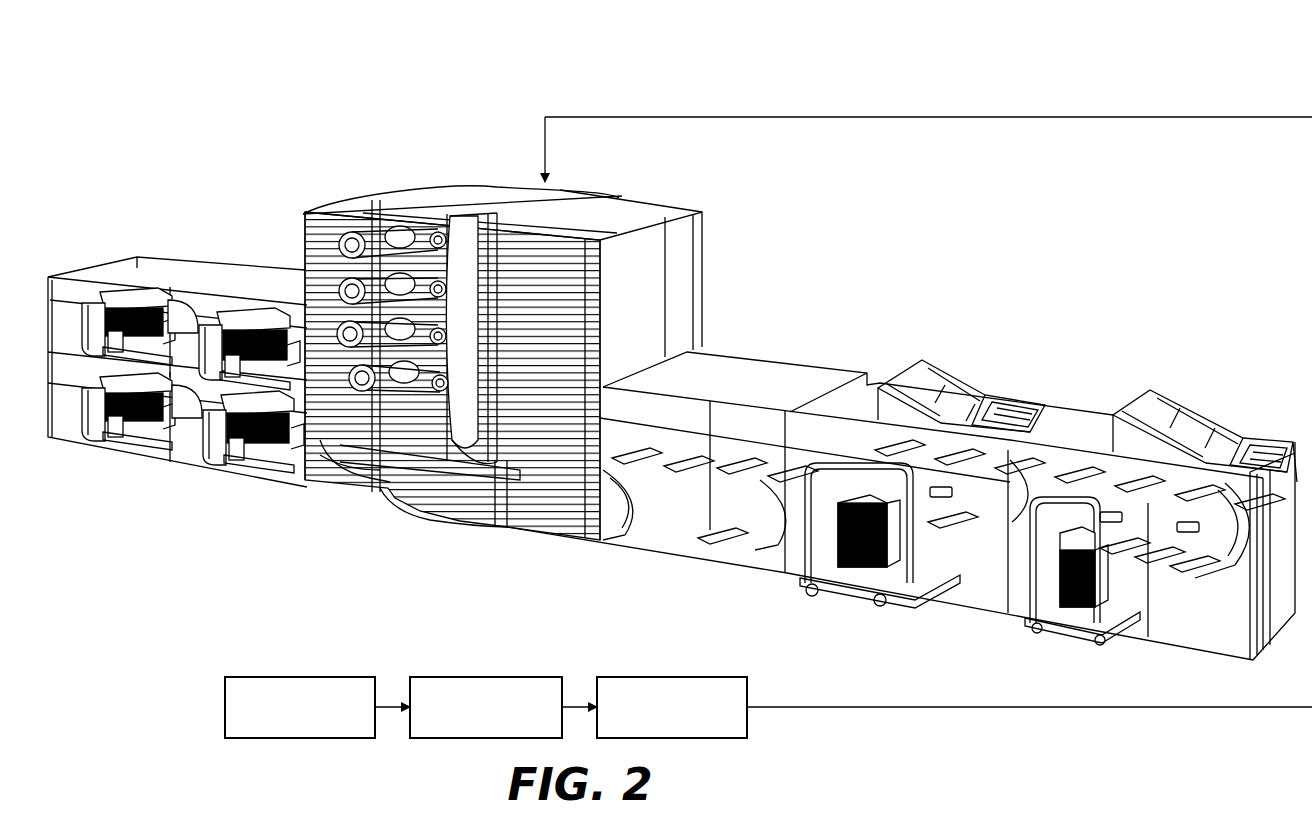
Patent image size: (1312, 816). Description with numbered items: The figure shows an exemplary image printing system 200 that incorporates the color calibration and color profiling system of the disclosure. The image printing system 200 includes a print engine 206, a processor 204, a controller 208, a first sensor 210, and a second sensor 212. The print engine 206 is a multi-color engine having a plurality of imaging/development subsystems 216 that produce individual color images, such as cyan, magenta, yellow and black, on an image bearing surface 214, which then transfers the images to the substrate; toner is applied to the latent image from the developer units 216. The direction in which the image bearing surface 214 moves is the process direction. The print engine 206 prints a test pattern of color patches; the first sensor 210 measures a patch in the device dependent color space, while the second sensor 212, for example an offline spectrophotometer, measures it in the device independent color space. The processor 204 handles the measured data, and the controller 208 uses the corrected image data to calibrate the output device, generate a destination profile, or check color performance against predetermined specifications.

The image printing system 200 is at (336, 90).
The processor 204 is at (548, 676).
The print engine 206 is at (590, 190).
The controller 208 is at (670, 676).
The first sensor 210 is at (511, 668).
The second sensor 212 is at (305, 676).
The image bearing surface 214 is at (490, 212).
The imaging/development subsystems 216 is at (365, 215).